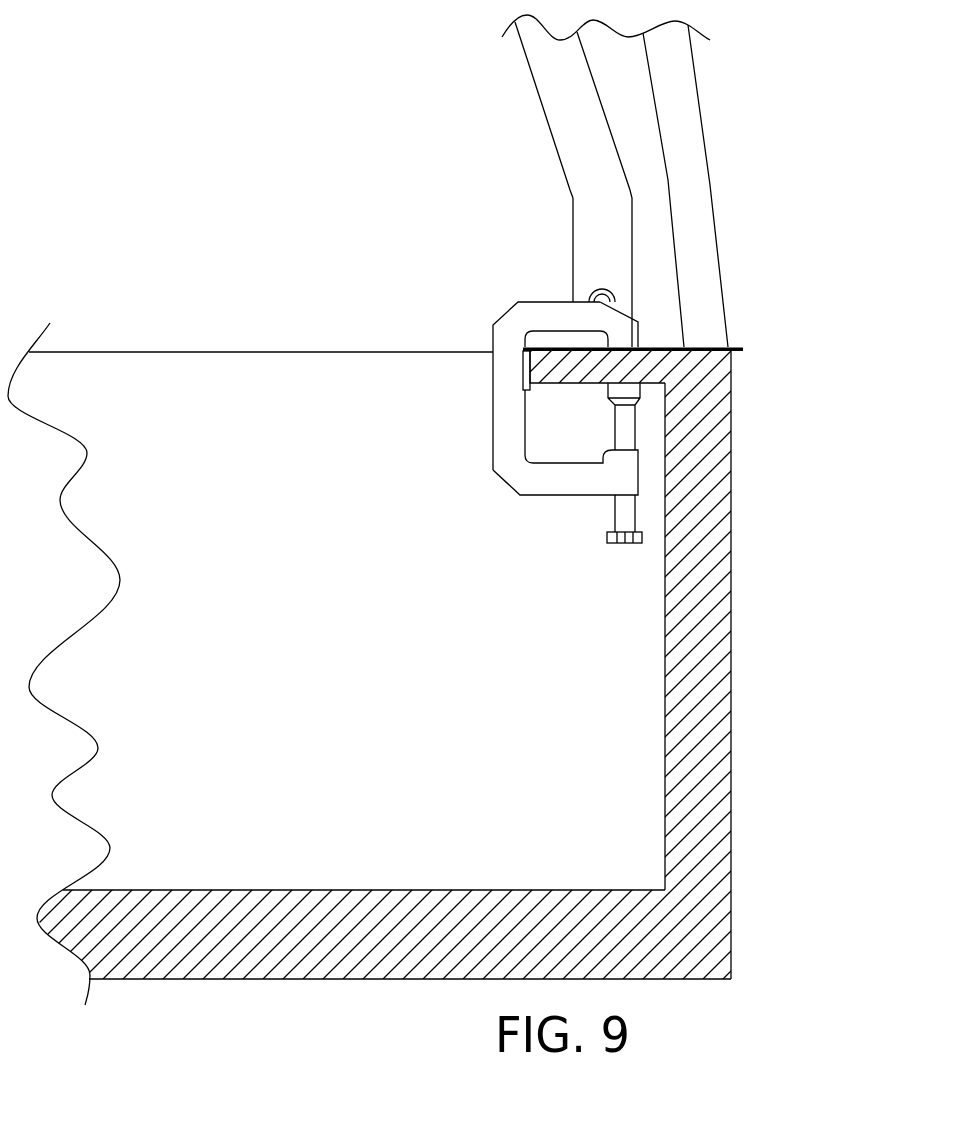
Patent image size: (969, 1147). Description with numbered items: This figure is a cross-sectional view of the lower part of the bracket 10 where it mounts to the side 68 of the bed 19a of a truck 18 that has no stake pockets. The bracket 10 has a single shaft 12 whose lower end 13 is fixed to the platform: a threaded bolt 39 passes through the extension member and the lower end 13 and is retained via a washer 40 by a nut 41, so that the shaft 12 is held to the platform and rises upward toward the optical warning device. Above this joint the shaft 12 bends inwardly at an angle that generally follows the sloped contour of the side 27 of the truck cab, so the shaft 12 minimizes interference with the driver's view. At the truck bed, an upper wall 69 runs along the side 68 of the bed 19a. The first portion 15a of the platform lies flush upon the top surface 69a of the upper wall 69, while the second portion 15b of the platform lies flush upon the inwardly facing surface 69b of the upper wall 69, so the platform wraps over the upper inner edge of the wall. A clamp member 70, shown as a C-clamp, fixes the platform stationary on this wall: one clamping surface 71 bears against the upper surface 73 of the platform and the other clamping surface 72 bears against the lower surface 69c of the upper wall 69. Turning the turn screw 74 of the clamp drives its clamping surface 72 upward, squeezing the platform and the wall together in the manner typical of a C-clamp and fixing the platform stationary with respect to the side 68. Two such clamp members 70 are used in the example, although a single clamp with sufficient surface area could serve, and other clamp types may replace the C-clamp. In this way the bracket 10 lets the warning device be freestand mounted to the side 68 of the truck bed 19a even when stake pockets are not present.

The bracket 10 is at (532, 73).
The shaft 12 is at (558, 150).
The lower end 13 is at (633, 243).
The side of cab 27 is at (709, 170).
The threaded bolt 39 is at (615, 295).
The washer 40 is at (592, 302).
The nut 41 is at (605, 289).
The upper wall 69 is at (553, 355).
The top surface 69a is at (707, 352).
The inwardly facing surface 69b is at (552, 390).
The lower surface 69c is at (584, 383).
The clamp member 70 is at (493, 452).
The clamping surface 71 is at (610, 345).
The clamping surface 72 is at (633, 383).
The upper surface 73 is at (652, 352).
The turn screw 74 is at (613, 512).
The first portion 15a is at (703, 348).
The second portion 15b is at (552, 388).
The truck 18 is at (733, 882).
The bed 19a is at (356, 890).
The side 68 is at (733, 640).